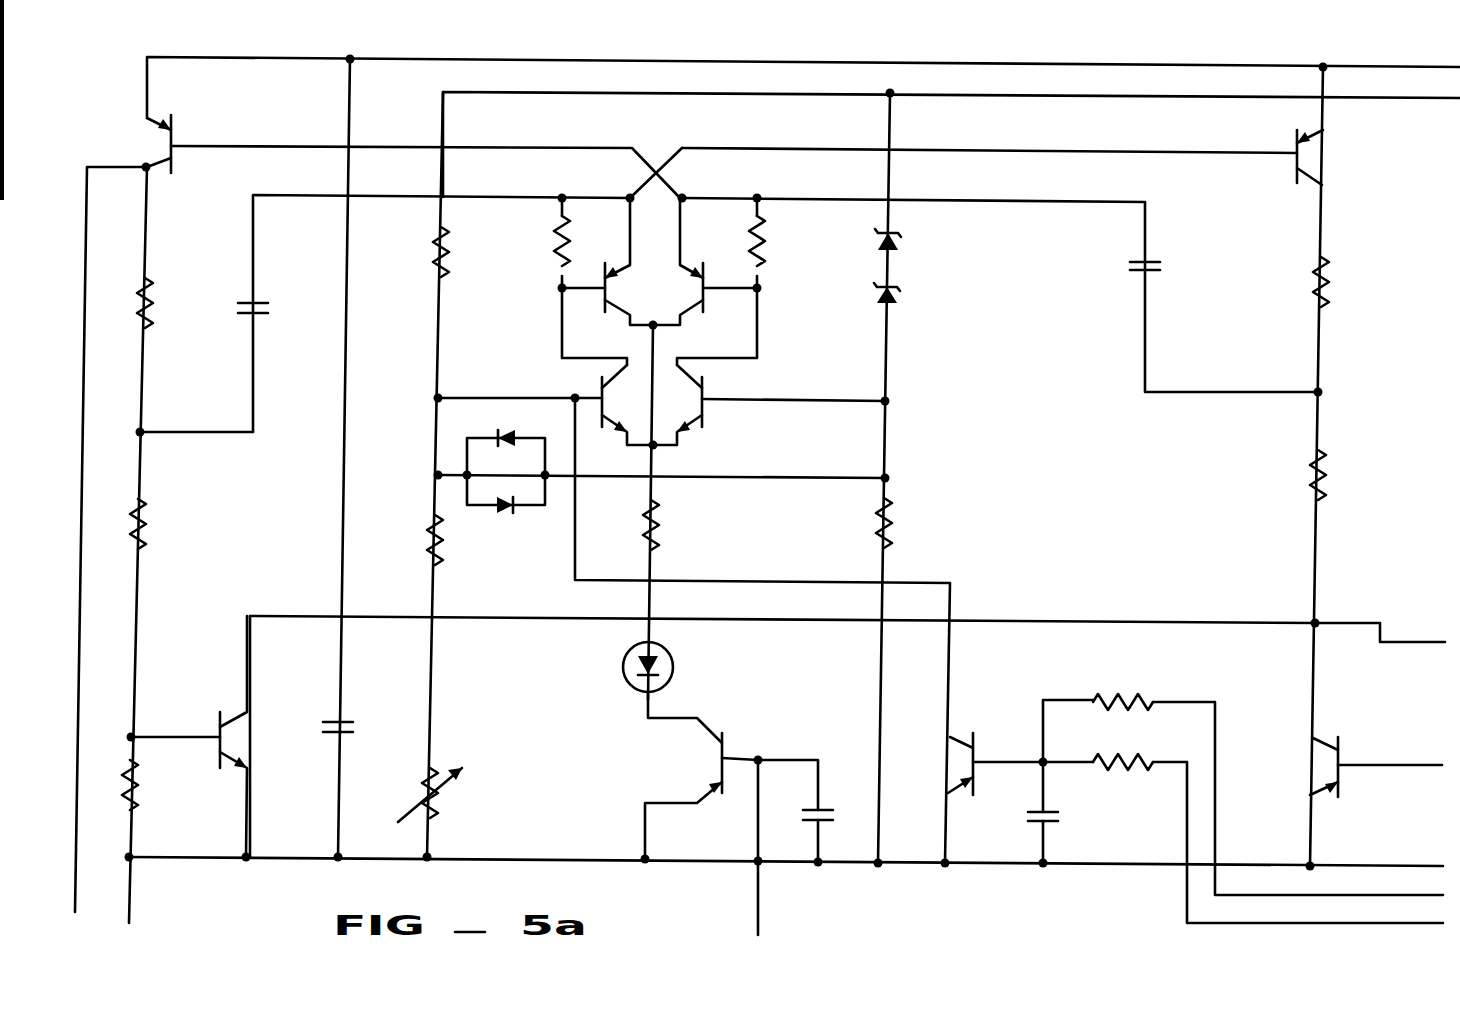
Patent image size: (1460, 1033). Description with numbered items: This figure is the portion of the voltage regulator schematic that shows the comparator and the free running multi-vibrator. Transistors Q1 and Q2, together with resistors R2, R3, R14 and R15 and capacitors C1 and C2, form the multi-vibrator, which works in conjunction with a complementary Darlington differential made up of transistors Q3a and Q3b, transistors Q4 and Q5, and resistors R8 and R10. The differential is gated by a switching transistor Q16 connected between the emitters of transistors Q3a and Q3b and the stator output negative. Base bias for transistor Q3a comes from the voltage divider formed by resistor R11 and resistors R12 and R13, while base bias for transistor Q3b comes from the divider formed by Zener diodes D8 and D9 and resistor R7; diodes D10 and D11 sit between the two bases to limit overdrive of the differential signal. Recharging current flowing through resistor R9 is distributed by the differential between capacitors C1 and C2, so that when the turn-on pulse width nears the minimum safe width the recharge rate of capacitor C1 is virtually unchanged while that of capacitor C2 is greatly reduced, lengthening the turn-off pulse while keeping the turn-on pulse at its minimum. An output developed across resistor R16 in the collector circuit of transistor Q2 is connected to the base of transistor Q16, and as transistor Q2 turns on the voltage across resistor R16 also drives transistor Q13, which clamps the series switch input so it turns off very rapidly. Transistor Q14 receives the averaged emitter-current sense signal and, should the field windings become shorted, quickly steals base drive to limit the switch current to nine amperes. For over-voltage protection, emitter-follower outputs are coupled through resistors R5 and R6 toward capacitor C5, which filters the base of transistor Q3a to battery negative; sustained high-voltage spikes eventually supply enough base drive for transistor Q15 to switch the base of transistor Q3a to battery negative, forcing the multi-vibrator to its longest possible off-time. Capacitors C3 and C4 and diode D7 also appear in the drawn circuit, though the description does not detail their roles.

The transistor Q1 is at (1338, 157).
The transistor Q2 is at (128, 143).
The transistor Q3a is at (615, 420).
The transistor Q3b is at (769, 420).
The transistor Q4 is at (607, 273).
The transistor Q5 is at (705, 273).
The transistor Q13 is at (189, 736).
The transistor Q14 is at (1345, 782).
The transistor Q15 is at (970, 764).
The switching transistor Q16 is at (681, 775).
The resistor R2 is at (1352, 282).
The resistor R3 is at (1350, 479).
The resistor R5 is at (1123, 682).
The resistor R6 is at (1123, 781).
The resistor R7 is at (908, 532).
The resistor R8 is at (750, 281).
The resistor R9 is at (681, 534).
The resistor R10 is at (555, 281).
The resistor R11 is at (474, 265).
The resistor R12 is at (469, 555).
The resistor R13 is at (454, 795).
The resistor R14 is at (176, 303).
The resistor R15 is at (177, 524).
The resistor R16 is at (165, 789).
The capacitor C1 is at (1169, 250).
The capacitor C2 is at (280, 312).
The capacitor C3 is at (361, 709).
The capacitor C4 is at (812, 811).
The capacitor C5 is at (1067, 812).
The diode D7 is at (673, 667).
The Zener diode D8 is at (917, 242).
The Zener diode D9 is at (916, 290).
The diode D10 is at (516, 438).
The diode D11 is at (506, 518).